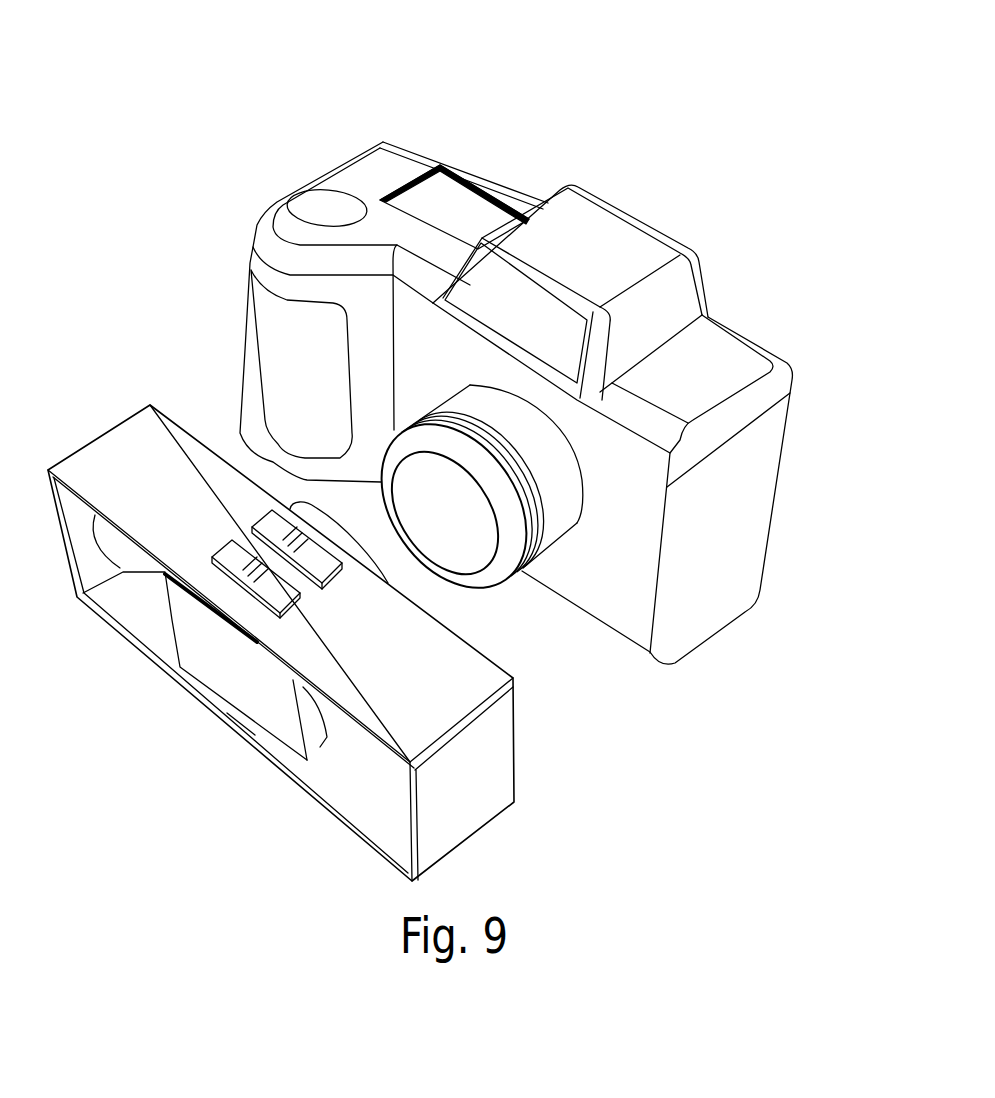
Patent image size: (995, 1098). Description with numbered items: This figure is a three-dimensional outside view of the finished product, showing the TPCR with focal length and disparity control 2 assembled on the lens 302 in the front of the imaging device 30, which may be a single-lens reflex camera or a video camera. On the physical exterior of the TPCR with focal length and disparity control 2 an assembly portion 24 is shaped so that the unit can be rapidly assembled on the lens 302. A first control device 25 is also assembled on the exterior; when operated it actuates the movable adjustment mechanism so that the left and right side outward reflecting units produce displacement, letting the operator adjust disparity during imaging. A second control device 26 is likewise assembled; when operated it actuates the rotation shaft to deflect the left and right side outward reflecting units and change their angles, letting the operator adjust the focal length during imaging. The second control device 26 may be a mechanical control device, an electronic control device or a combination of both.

The imaging device 30 is at (393, 167).
The lens 302 is at (472, 533).
The TPCR with focal length and disparity control 2 is at (470, 795).
The assembly portion 24 is at (388, 582).
The first control device 25 is at (272, 523).
The second control device 26 is at (233, 557).